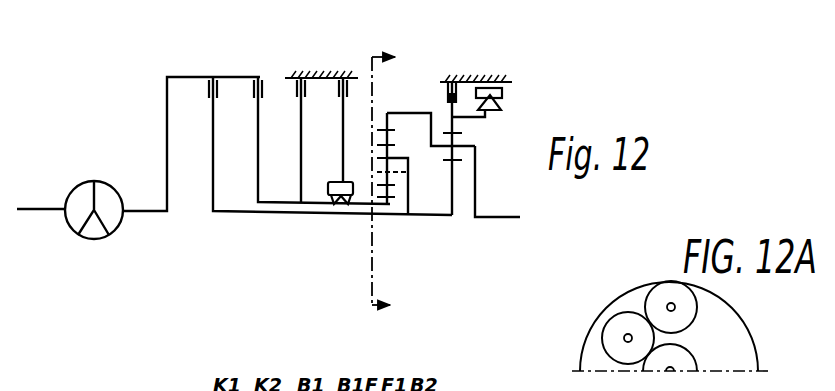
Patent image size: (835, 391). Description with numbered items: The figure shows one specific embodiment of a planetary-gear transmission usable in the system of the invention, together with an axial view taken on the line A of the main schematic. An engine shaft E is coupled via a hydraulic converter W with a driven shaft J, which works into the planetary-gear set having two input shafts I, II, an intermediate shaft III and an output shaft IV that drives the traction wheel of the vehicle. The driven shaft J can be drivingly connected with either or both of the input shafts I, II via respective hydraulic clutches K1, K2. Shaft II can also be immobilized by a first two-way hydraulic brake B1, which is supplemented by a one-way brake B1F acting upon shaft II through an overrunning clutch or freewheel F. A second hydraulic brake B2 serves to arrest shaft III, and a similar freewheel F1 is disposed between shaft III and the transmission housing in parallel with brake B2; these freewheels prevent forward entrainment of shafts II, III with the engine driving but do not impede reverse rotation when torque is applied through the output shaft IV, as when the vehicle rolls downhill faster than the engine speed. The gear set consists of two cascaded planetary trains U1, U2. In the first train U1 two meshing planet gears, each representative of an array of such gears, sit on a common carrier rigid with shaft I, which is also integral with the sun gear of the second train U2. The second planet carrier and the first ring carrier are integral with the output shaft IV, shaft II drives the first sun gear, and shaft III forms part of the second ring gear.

In FIG. 12, the engine shaft E is at (38, 213).
In FIG. 12, the hydraulic converter W is at (92, 187).
In FIG. 12, the driven shaft J is at (139, 213).
In FIG. 12, the first input shaft I is at (240, 214).
In FIG. 12, the second input shaft II is at (285, 215).
In FIG. 12, the intermediate shaft III is at (485, 117).
In FIG. 12, the output shaft IV is at (494, 215).
In FIG. 12, the first hydraulic clutch K1 is at (215, 75).
In FIG. 12, the second hydraulic clutch K2 is at (260, 75).
In FIG. 12, the first hydraulic brake B1 is at (302, 77).
In FIG. 12, the one-way brake B1F is at (347, 77).
In FIG. 12, the second hydraulic brake B2 is at (455, 81).
In FIG. 12, the freewheel F is at (338, 206).
In FIG. 12, the freewheel F1 is at (493, 81).
In FIG. 12, the first planetary-gear train U1 is at (400, 178).
In FIG. 12A, the first planetary-gear train U1 is at (609, 297).
In FIG. 12, the second planetary-gear train U2 is at (460, 178).
In FIG. 12, the section line A- A is at (392, 181).